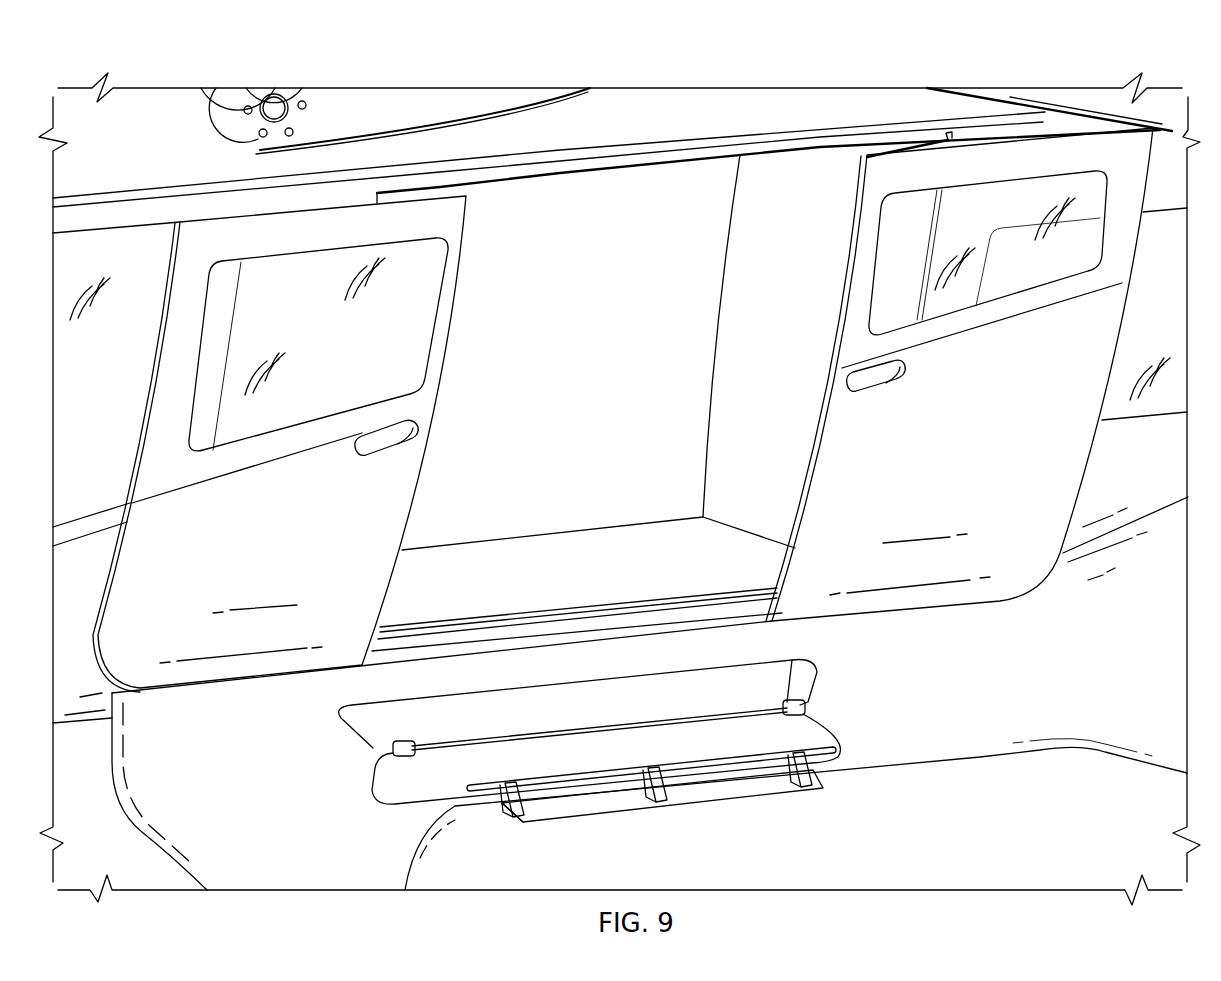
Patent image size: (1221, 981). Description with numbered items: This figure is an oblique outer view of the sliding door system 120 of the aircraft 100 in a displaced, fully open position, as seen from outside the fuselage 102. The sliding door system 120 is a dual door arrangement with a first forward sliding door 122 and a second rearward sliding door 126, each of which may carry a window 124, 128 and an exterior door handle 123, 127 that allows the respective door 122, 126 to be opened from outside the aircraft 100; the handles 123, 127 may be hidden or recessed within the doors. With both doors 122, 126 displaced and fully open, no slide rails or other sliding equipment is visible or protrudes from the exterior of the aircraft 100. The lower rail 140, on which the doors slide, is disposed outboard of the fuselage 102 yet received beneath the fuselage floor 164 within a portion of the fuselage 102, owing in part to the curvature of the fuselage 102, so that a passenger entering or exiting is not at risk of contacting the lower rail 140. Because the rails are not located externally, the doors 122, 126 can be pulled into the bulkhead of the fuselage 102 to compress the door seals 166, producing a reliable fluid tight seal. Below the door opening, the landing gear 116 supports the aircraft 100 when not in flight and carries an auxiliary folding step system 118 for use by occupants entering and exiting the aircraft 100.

The aircraft 100 is at (863, 80).
The fuselage 102 is at (88, 732).
The landing gear 116 is at (903, 772).
The auxiliary folding step system 118 is at (725, 802).
The sliding door system 120 is at (1041, 629).
The first forward sliding door 122 is at (458, 322).
The door handle 123 is at (420, 434).
The window 124 is at (436, 272).
The second rearward sliding door 126 is at (1092, 462).
The door handle 127 is at (853, 384).
The window 128 is at (888, 292).
The lower rail 140 is at (572, 630).
The fuselage floor 164 is at (608, 545).
The door seals 166 is at (633, 162).